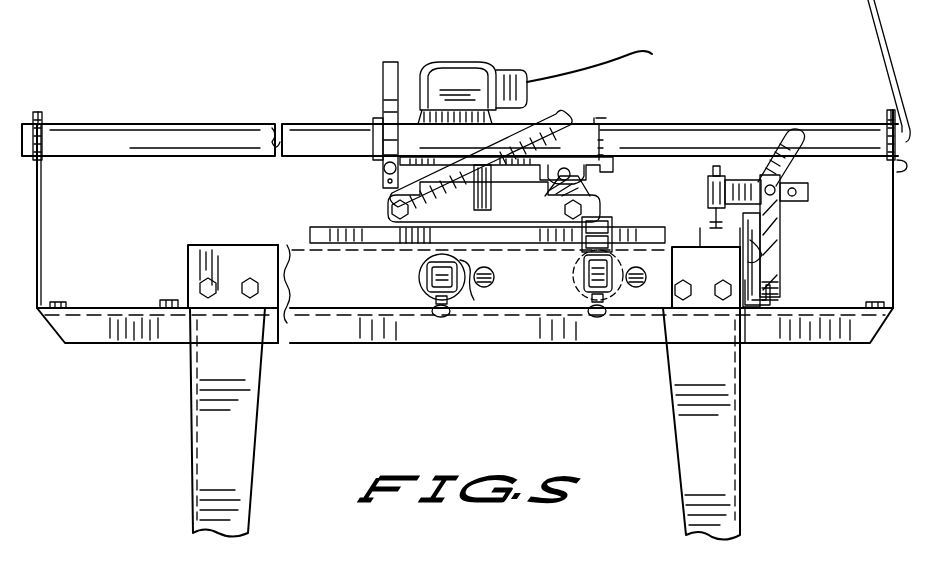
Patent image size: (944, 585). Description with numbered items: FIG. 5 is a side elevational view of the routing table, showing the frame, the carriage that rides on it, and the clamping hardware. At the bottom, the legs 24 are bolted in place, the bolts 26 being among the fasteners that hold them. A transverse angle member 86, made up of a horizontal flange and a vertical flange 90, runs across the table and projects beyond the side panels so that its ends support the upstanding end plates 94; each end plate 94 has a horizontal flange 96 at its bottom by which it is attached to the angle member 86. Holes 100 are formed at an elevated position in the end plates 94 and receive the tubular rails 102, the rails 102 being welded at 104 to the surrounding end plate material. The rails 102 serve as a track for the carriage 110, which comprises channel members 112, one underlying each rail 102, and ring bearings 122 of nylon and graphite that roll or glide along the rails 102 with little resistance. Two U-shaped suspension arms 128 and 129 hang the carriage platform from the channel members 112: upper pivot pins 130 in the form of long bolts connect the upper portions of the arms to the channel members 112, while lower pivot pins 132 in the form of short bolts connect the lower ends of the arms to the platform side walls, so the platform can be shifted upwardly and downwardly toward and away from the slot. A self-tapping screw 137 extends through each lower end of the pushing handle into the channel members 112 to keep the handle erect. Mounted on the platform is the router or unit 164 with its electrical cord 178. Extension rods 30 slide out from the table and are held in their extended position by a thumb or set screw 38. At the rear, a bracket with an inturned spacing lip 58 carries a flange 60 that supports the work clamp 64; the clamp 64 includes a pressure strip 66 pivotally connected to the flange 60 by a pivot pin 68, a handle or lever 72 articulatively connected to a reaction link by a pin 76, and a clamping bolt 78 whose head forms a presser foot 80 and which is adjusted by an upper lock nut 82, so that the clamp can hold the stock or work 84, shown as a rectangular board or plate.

The leg 24 is at (232, 480).
The bolt 26 is at (250, 298).
The extension rod 30 is at (442, 318).
The thumb or set screw 38 is at (597, 318).
The inturned spacing lip 58 is at (763, 317).
The flange 60 is at (768, 284).
The work clamp 64 is at (810, 212).
The pressure strip 66 is at (742, 178).
The pivot pin 68 is at (771, 184).
The handle or lever 72 is at (824, 132).
The pin 76 is at (808, 192).
The clamping bolt 78 is at (712, 220).
The presser foot 80 is at (720, 230).
The upper lock nut 82 is at (715, 166).
The stock or work 84 is at (320, 226).
The transverse angle member 86 is at (108, 346).
The vertical flange 90 is at (327, 332).
The end plate 94 is at (41, 215).
The horizontal flange 96 is at (70, 302).
The hole 100 is at (36, 112).
The tubular rail 102 is at (178, 124).
The weld 104 is at (45, 122).
The carriage 110 is at (352, 106).
The channel member 112 is at (362, 172).
The ring bearing 122 is at (370, 124).
The U-shaped suspension arm 128 is at (378, 205).
The U-shaped suspension arm 129 is at (613, 186).
The upper pivot pin 130 is at (566, 168).
The lower pivot pin 132 is at (400, 219).
The self-tapping screw 137 is at (383, 184).
The router or unit 164 is at (530, 54).
The electrical cord 178 is at (652, 54).